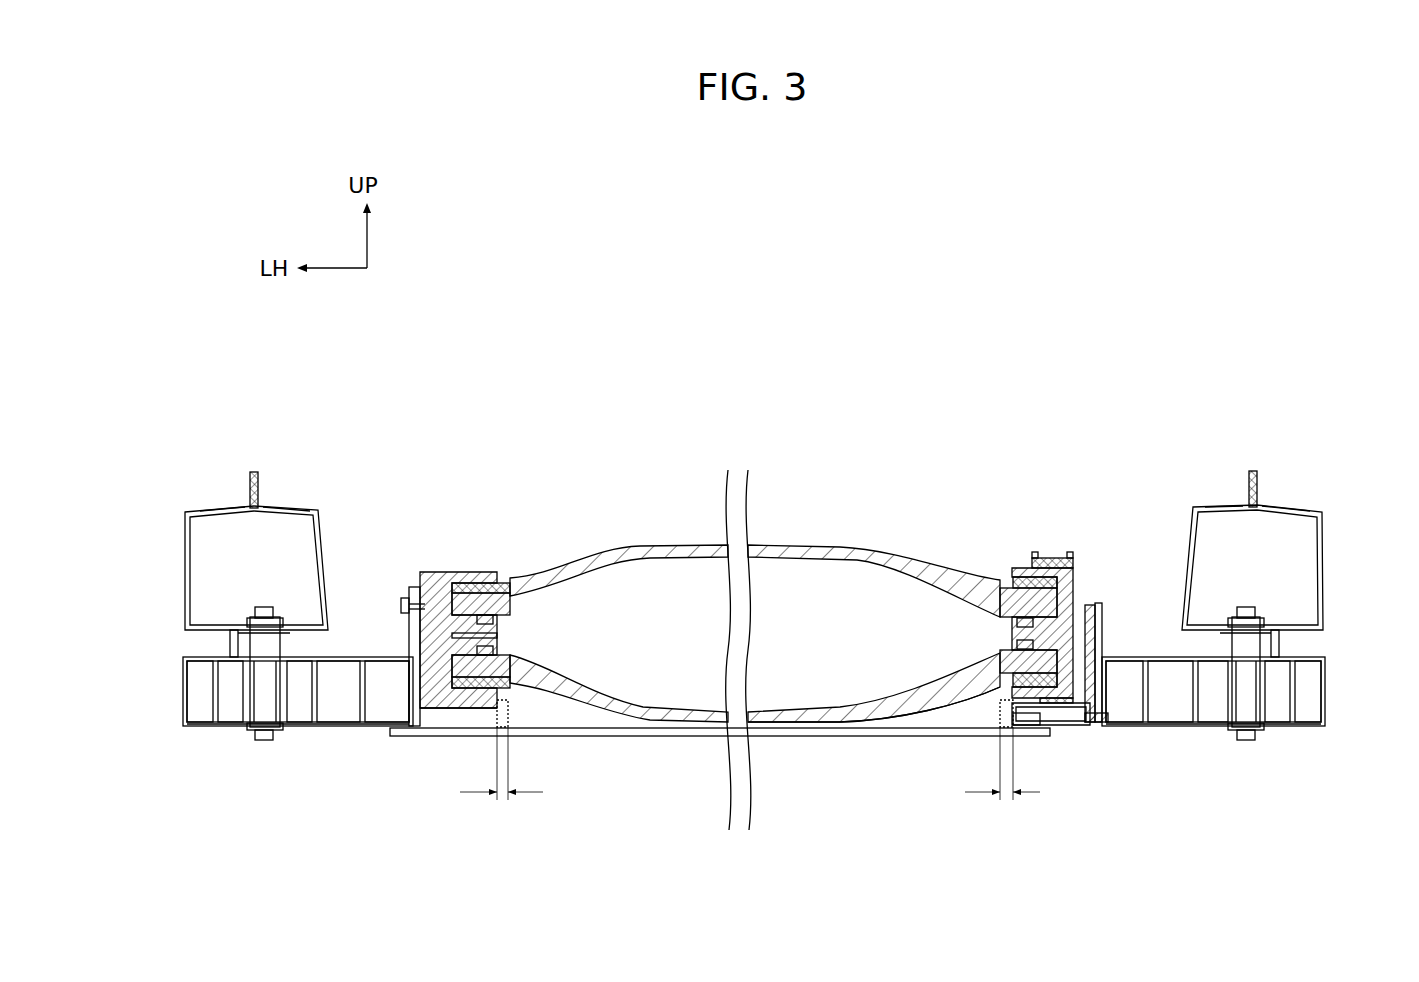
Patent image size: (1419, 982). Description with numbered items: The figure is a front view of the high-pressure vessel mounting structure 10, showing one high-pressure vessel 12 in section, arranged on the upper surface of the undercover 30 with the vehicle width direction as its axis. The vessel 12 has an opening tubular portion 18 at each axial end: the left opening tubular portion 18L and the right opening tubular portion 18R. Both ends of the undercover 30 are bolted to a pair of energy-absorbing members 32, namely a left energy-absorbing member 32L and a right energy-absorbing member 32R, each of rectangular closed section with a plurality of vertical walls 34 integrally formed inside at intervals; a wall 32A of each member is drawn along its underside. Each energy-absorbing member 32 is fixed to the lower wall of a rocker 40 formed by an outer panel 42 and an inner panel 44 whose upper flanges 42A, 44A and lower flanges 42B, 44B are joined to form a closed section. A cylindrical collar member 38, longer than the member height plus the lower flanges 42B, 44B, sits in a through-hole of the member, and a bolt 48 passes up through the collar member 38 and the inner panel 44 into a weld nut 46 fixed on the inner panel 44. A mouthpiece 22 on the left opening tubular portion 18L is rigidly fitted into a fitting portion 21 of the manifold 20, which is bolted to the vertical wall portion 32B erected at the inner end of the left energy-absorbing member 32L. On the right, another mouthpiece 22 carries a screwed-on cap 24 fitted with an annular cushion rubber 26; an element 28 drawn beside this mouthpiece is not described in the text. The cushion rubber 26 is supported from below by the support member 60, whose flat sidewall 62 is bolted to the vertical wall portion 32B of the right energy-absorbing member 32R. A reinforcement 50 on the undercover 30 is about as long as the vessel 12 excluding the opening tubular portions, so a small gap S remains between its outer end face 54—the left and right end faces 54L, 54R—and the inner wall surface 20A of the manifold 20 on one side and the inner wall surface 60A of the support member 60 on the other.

The high-pressure vessel mounting structure 10 is at (759, 428).
The high-pressure vessel 12 is at (811, 540).
The opening tubular portion 18 is at (754, 565).
The opening tubular portion 18L is at (529, 565).
The opening tubular portion 18R is at (1010, 590).
The manifold 20 is at (460, 563).
The inner wall surface 20A is at (470, 724).
The fitting portion 21 is at (503, 580).
The mouthpiece 22 is at (520, 590).
The cap 24 is at (1073, 590).
The cushion rubber 26 is at (1070, 556).
The clip 28 is at (1062, 566).
The undercover 30 is at (693, 740).
The energy-absorbing member 32 is at (749, 750).
The left energy-absorbing member 32L is at (180, 735).
The right energy-absorbing member 32R is at (1328, 735).
The frame bottom wall 32A is at (352, 729).
The vertical wall portion 32B is at (409, 588).
The vertical wall 34 is at (219, 729).
The collar member 38 is at (273, 729).
The rocker 40 is at (753, 616).
The outer panel 42 is at (753, 512).
The upper flange 42A is at (251, 472).
The lower flange 42B is at (228, 645).
The inner panel 44 is at (754, 508).
The upper flange 44A is at (258, 472).
The lower flange 44B is at (243, 628).
The weld nut 46 is at (268, 606).
The bolt 48 is at (258, 742).
The reinforcement 50 is at (908, 724).
The outer end face 54 is at (755, 770).
The left gap 54L is at (508, 740).
The right gap 54R is at (990, 728).
The support member 60 is at (1072, 783).
The inner wall surface 60A is at (1014, 742).
The sidewall 62 is at (1091, 604).
The gap S is at (502, 800).